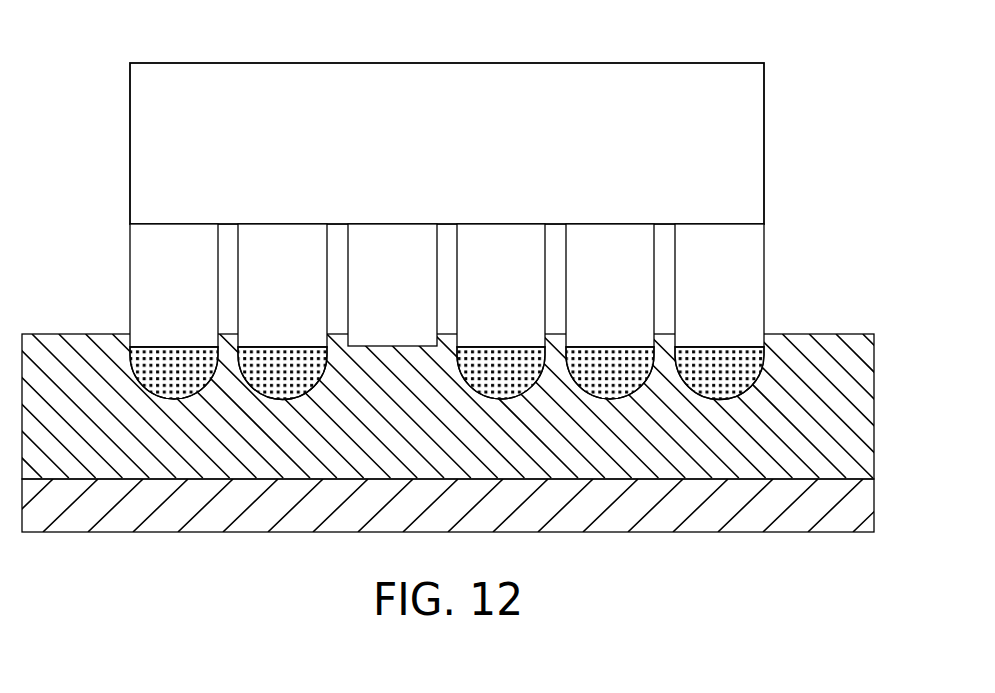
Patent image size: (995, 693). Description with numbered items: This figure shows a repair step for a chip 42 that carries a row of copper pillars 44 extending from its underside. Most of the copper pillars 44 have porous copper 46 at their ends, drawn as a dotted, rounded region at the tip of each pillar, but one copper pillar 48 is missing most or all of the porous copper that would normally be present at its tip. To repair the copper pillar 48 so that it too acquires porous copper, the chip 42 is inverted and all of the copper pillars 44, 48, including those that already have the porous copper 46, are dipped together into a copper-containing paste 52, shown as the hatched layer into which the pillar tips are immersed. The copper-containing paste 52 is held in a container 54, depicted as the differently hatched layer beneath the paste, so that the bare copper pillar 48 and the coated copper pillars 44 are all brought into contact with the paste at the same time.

The chip 42 is at (148, 125).
The copper pillars 44 is at (151, 251).
The porous copper 46 is at (148, 367).
The copper pillar 48 is at (386, 251).
The copper-containing paste 52 is at (818, 351).
The container 54 is at (811, 518).